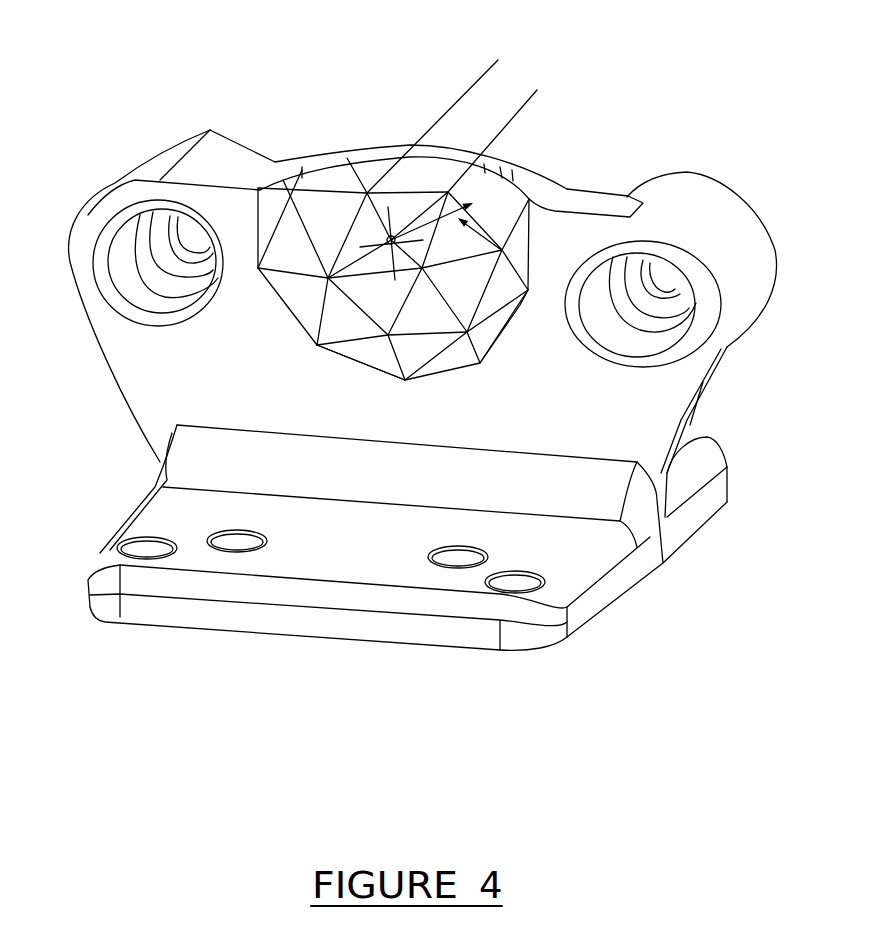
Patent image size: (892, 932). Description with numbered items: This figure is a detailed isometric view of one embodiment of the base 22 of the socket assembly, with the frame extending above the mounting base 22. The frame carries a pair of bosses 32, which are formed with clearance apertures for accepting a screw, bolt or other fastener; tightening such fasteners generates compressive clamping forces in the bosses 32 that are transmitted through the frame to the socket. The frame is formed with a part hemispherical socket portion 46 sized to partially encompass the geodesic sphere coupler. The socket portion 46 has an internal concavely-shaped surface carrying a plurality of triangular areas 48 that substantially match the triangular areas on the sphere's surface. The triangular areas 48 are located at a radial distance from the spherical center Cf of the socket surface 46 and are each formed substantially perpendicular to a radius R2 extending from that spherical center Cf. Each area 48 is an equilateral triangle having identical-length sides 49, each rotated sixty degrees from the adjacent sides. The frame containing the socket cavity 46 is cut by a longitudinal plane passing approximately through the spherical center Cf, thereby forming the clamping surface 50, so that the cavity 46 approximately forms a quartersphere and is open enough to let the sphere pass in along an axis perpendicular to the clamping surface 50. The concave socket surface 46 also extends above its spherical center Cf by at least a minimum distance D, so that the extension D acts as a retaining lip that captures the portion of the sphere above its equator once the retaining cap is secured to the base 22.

The base 22 is at (736, 470).
The bosses 32 is at (138, 153).
The part hemispherical socket portion 46 is at (462, 353).
The triangular areas 48 is at (325, 222).
The sides 49 is at (329, 192).
The clamping surface 50 is at (131, 336).
The spherical center Cf is at (391, 243).
The radius R2 is at (530, 210).
The extension D is at (443, 40).